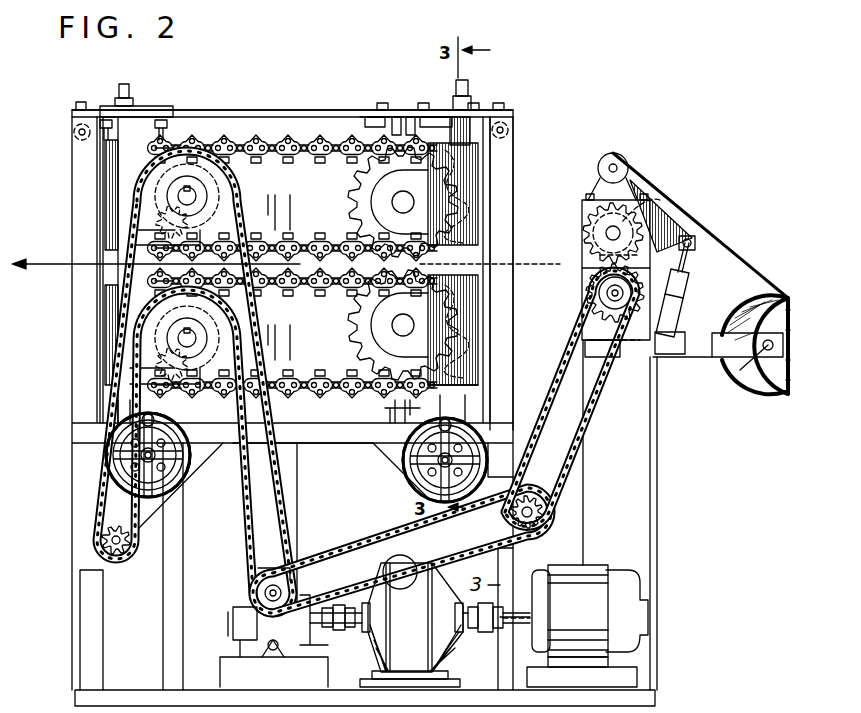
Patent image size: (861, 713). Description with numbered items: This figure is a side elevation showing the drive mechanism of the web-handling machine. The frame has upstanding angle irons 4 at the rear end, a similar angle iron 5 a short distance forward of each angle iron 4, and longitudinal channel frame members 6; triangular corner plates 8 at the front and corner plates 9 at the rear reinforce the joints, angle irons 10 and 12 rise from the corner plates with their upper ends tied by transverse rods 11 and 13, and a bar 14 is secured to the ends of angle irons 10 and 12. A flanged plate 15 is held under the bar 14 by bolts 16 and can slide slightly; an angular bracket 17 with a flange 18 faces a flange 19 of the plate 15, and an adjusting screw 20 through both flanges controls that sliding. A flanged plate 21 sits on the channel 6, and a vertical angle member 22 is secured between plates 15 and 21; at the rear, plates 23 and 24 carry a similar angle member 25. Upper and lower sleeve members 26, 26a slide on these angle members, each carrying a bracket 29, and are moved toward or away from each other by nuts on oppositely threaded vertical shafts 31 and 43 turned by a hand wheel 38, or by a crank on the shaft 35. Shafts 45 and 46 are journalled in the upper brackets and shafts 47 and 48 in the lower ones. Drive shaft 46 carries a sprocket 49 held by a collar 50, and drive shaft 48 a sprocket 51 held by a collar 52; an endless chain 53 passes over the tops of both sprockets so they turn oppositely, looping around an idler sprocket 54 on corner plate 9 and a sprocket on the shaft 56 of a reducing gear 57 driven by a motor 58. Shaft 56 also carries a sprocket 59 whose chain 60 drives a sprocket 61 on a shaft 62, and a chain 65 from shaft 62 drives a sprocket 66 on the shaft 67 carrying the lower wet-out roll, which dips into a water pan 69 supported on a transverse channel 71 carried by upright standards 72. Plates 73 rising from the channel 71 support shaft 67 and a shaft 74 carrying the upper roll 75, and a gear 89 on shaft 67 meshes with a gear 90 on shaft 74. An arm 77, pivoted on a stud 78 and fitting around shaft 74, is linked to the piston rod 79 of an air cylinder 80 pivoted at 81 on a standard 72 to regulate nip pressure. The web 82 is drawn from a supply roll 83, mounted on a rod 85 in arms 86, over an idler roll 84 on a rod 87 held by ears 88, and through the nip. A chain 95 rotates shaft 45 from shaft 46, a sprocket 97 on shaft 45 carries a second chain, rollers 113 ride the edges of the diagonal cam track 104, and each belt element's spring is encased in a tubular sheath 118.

The angle iron 4 is at (92, 647).
The angle iron 5 is at (172, 647).
The longitudinal frame member 6 is at (316, 443).
The triangular corner plate 8 is at (380, 447).
The corner plate 9 is at (198, 455).
The angle iron 10 is at (515, 173).
The transverse rod 11 is at (512, 126).
The angle iron 12 is at (80, 407).
The rod 13 is at (74, 133).
The bar 14 is at (292, 110).
The flanged plate 15 is at (436, 120).
The bolt 16 is at (383, 103).
The angular bracket 17 is at (372, 118).
The flange 18 is at (398, 120).
The flange 19 is at (410, 120).
The adjusting screw 20 is at (366, 117).
The flanged plate 21 is at (485, 428).
The angle member 22 is at (470, 136).
The plate 23 is at (152, 108).
The plate 24 is at (125, 426).
The angle member 25 is at (100, 140).
The upper sleeve member 26 is at (96, 177).
The lower sleeve member 26a is at (96, 313).
The bracket 29 is at (135, 246).
The vertical shaft 31 is at (470, 100).
The shaft 35 is at (140, 461).
The hand wheel 38 is at (178, 480).
The vertical shaft 43 is at (112, 90).
The shaft 45 is at (410, 201).
The drive shaft 46 is at (185, 204).
The shaft 47 is at (395, 325).
The second drive shaft 48 is at (185, 345).
The sprocket 49 is at (150, 213).
The collar 50 is at (172, 192).
The sprocket 51 is at (145, 368).
The collar 52 is at (172, 330).
The endless chain 53 is at (105, 500).
The idler sprocket 54 is at (108, 540).
The shaft 56 is at (300, 589).
The reducing gear 57 is at (252, 629).
The motor 58 is at (597, 569).
The sprocket 59 is at (262, 593).
The endless chain 60 is at (380, 540).
The sprocket 61 is at (540, 522).
The shaft 62 is at (584, 512).
The endless chain 65 is at (600, 385).
The sprocket 66 is at (618, 354).
The shaft 67 is at (596, 318).
The pan 69 is at (598, 305).
The transverse channel member 71 is at (602, 348).
The upright standard 72 is at (655, 428).
The plate 73 is at (600, 271).
The shaft 74 is at (604, 235).
The upper roll 75 is at (600, 250).
The arm 77 is at (672, 240).
The stud 78 is at (682, 210).
The piston rod 79 is at (684, 278).
The air cylinder 80 is at (680, 308).
The pivotal support 81 is at (681, 345).
The web 82 is at (671, 189).
The supply roll 83 is at (762, 395).
The idler roll 84 is at (627, 163).
The rod 85 is at (740, 365).
The arm 86 is at (718, 352).
The rod 87 is at (615, 166).
The ear 88 is at (600, 200).
The gear 89 is at (598, 291).
The gear 90 is at (596, 216).
The endless chain 95 is at (268, 140).
The sprocket 97 is at (352, 195).
The cam track 104 is at (300, 191).
The roller 113 is at (258, 165).
The tubular sheath 118 is at (240, 143).